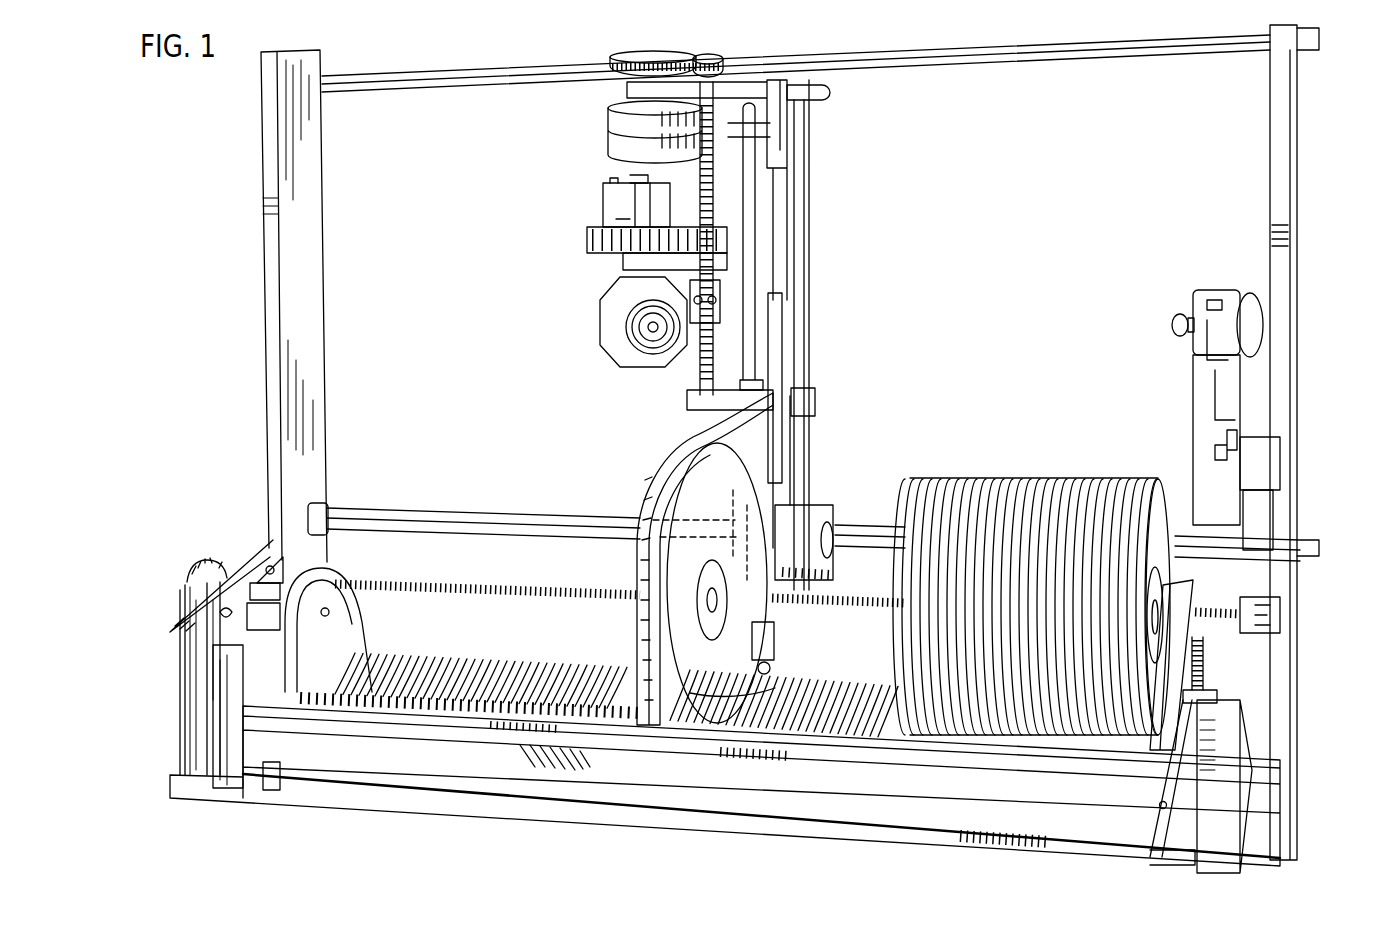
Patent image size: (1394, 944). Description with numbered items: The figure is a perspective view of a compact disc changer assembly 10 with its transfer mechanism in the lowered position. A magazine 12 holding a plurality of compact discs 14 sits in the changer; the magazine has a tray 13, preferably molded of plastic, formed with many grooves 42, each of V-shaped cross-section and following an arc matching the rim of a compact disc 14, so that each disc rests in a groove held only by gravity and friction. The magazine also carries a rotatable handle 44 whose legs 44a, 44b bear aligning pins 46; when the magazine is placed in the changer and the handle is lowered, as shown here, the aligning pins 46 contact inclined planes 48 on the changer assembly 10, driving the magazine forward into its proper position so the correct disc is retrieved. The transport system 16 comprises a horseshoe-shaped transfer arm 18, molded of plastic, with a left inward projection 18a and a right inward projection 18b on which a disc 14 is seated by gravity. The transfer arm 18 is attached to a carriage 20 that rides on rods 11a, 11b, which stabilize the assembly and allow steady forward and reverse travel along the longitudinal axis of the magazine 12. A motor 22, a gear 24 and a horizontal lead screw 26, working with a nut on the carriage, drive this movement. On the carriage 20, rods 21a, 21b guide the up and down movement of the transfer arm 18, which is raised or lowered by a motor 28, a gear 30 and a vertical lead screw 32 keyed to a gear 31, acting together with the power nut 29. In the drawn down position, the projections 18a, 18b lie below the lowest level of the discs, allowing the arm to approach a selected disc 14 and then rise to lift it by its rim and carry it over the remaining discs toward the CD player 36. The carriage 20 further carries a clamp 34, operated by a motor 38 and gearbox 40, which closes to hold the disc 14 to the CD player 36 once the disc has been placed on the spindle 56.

The compact disc changer assembly 10 is at (1303, 507).
The rod 11a is at (975, 58).
The rod 11b is at (873, 523).
The magazine 12 is at (599, 610).
The tray 13 is at (466, 640).
The compact disc 14 is at (721, 523).
The transport system 16 is at (808, 204).
The transfer arm 18 is at (652, 485).
The left inward projection 18a is at (758, 690).
The right inward projection 18b is at (777, 650).
The carriage 20 is at (832, 93).
The rod 21a is at (760, 338).
The rod 21b is at (808, 372).
The motor 22 is at (248, 560).
The gear 24 is at (197, 580).
The horizontal lead screw 26 is at (396, 583).
The motor 28 is at (622, 118).
The power nut 29 is at (688, 398).
The gear 30 is at (627, 52).
The gear 31 is at (740, 55).
The vertical lead screw 32 is at (713, 190).
The clamp 34 is at (610, 308).
The CD player 36 is at (1203, 283).
The motor 38 is at (603, 205).
The gearbox 40 is at (590, 250).
The magazine groove 42 is at (703, 678).
The rotatable handle 44 is at (328, 752).
The leg 44a is at (295, 567).
The leg 44b is at (1183, 740).
The aligning pin 46 is at (230, 700).
The inclined plane 48 is at (248, 590).
The spindle 56 is at (1170, 320).